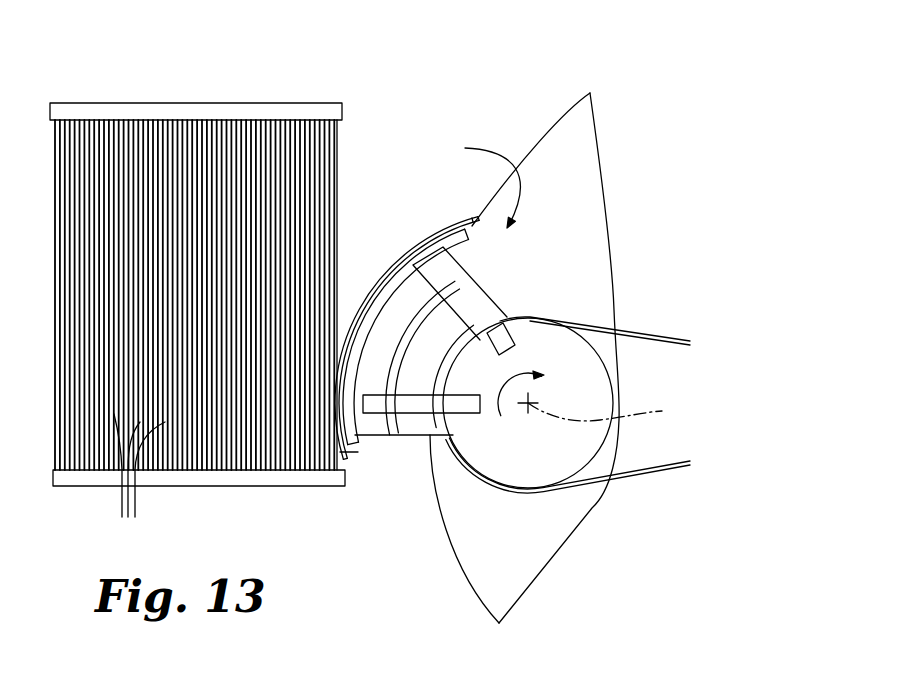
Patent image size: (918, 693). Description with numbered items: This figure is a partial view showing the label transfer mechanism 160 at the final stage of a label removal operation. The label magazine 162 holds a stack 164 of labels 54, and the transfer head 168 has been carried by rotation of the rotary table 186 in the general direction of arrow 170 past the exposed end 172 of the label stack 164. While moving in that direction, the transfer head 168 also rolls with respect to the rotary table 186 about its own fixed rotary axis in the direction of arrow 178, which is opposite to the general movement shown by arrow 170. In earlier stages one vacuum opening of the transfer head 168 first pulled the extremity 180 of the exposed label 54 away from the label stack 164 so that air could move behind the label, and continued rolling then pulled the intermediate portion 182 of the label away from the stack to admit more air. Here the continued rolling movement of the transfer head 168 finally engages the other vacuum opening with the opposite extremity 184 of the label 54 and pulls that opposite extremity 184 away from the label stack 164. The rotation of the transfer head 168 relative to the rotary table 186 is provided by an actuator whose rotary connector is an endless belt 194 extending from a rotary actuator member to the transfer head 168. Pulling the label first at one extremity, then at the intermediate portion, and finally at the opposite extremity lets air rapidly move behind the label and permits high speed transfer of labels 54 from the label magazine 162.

The labels 54 is at (139, 479).
The label transfer mechanism 160 is at (524, 358).
The label magazine 162 is at (243, 251).
The label stack 164 is at (121, 121).
The transfer head 168 is at (390, 461).
The arrow 170 is at (472, 181).
The exposed end 172 is at (340, 151).
The arrow 178 is at (503, 385).
The extremity 180 is at (447, 225).
The intermediate portion 182 is at (357, 327).
The opposite extremity 184 is at (335, 468).
The rotary table 186 is at (585, 237).
The endless belt 194 is at (622, 324).